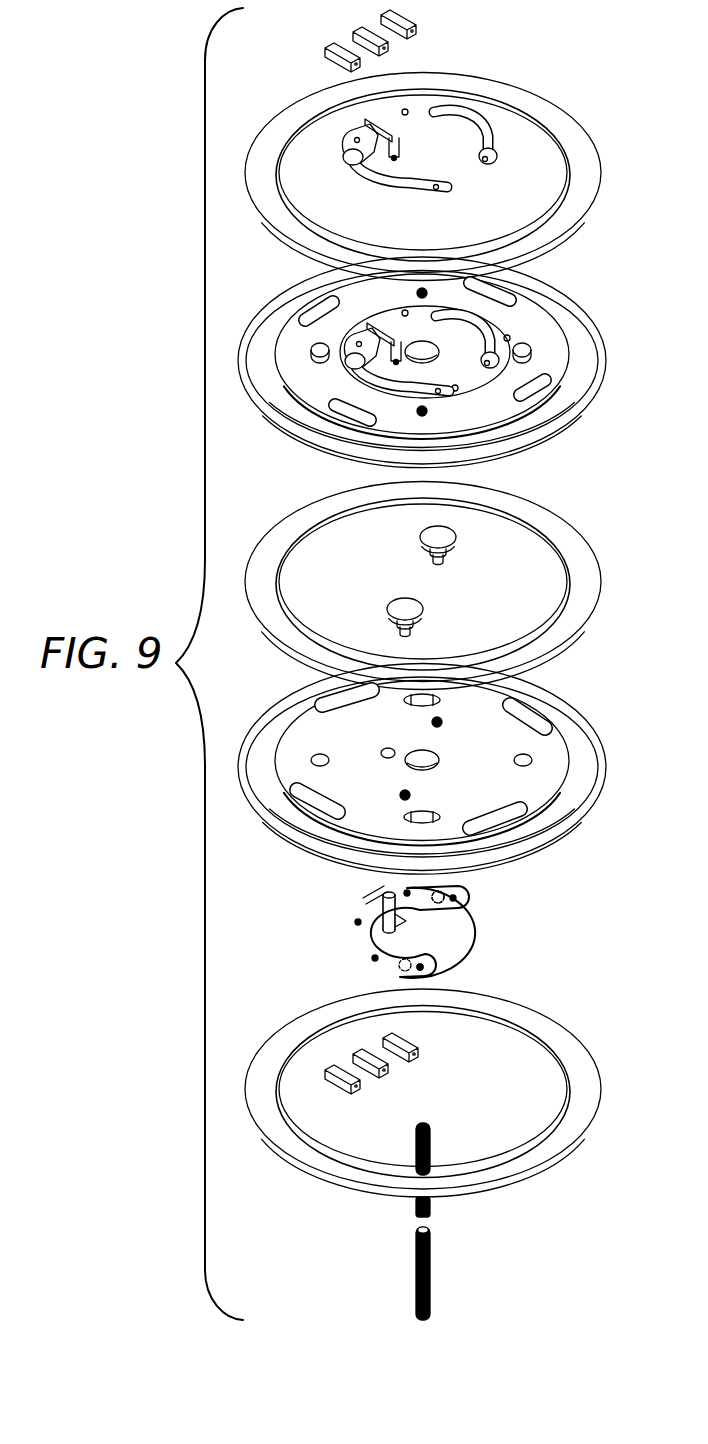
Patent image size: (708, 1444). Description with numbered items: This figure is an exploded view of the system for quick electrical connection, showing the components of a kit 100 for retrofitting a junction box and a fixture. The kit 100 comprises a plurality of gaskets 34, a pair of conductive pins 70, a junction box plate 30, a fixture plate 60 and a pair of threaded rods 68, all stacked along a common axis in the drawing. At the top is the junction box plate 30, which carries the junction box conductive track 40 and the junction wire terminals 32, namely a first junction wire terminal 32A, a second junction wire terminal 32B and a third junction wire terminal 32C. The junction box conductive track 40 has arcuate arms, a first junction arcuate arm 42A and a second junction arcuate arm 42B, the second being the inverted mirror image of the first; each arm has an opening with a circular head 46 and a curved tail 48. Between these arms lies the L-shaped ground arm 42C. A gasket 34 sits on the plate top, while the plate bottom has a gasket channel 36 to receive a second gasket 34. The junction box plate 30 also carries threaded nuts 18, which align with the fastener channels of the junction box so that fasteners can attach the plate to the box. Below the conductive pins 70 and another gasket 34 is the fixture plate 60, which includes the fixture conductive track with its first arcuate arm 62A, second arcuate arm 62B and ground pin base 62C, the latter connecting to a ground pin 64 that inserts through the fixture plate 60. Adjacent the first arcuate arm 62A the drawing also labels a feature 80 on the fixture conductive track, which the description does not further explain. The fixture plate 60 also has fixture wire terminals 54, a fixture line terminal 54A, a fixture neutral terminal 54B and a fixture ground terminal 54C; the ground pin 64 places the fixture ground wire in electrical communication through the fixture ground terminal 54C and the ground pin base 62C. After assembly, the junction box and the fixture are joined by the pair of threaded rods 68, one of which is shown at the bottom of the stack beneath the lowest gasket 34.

The kit 100 is at (128, 365).
The threaded nuts 18 is at (428, 416).
The junction box plate 30 is at (528, 312).
The junction wire terminals 32 is at (423, 16).
The first junction wire terminal 32A is at (383, 15).
The second junction wire terminal 32B is at (360, 67).
The third junction wire terminal 32C is at (353, 34).
The gasket 34 is at (583, 160).
The gasket channel 36 is at (583, 350).
The junction box conductive track 40 is at (406, 111).
The first junction arcuate arm 42A is at (433, 110).
The second junction arcuate arm 42B is at (352, 128).
The ground arm 42C is at (367, 108).
The circular head 46 is at (487, 343).
The curved tail 48 is at (357, 378).
The fixture wire terminals 54 is at (343, 1110).
The fixture line terminal 54A is at (417, 1058).
The fixture neutral terminal 54B is at (357, 1090).
The fixture ground terminal 54C is at (387, 1075).
The fixture plate 60 is at (604, 752).
The first arcuate arm 62A is at (455, 888).
The second arcuate arm 62B is at (432, 961).
The ground pin base 62C is at (372, 898).
The ground pin 64 is at (398, 924).
The threaded rods 68 is at (432, 1268).
The conductive pins 70 is at (412, 606).
The hole 80 is at (445, 908).